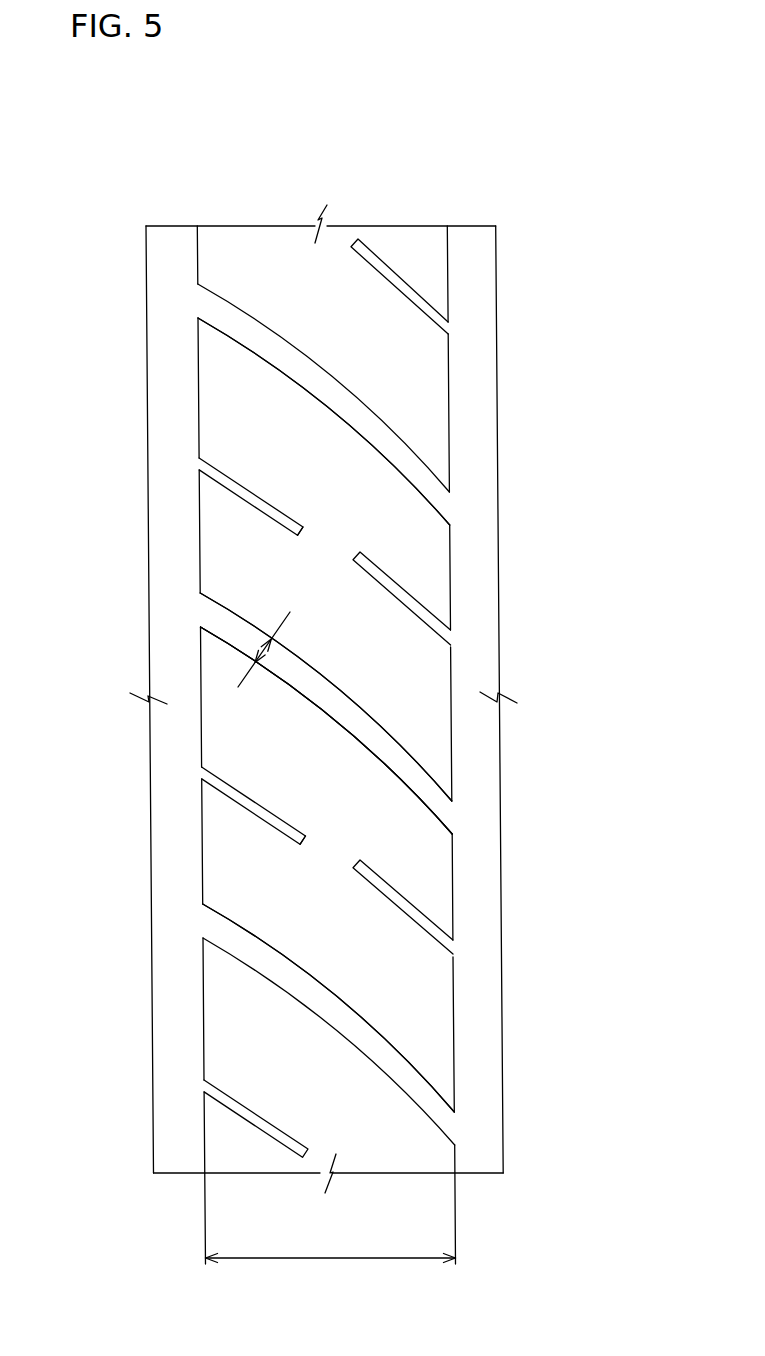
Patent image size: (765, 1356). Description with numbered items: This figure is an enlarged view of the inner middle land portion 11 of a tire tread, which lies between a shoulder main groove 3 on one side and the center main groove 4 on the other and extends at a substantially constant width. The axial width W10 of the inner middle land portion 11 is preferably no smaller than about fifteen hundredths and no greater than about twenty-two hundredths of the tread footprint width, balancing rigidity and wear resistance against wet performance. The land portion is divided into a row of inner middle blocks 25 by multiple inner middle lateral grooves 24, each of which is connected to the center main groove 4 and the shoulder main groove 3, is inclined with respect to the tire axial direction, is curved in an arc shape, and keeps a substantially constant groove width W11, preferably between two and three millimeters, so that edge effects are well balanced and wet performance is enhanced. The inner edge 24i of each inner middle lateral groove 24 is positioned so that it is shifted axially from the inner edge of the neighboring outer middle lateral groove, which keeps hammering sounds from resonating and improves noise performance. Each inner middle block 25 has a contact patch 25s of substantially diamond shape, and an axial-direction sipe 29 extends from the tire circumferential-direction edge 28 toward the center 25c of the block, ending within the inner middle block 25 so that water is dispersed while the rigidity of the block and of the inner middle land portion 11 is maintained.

The shoulder main groove 3 is at (173, 256).
The center main groove 4 is at (468, 254).
The inner middle land portion 11 is at (281, 258).
The inner middle lateral groove 24 is at (360, 418).
The inner edge of inner middle lateral groove 24i is at (453, 818).
The inner middle block 25 is at (252, 867).
The contact patch 25s is at (410, 682).
The center of inner middle block 25c is at (332, 532).
The tire circumferential-direction edge 28 is at (197, 363).
The axial-direction sipe 29 is at (237, 490).
The width of inner middle land portion W10 is at (331, 1274).
The groove width of inner middle lateral groove W11 is at (258, 640).